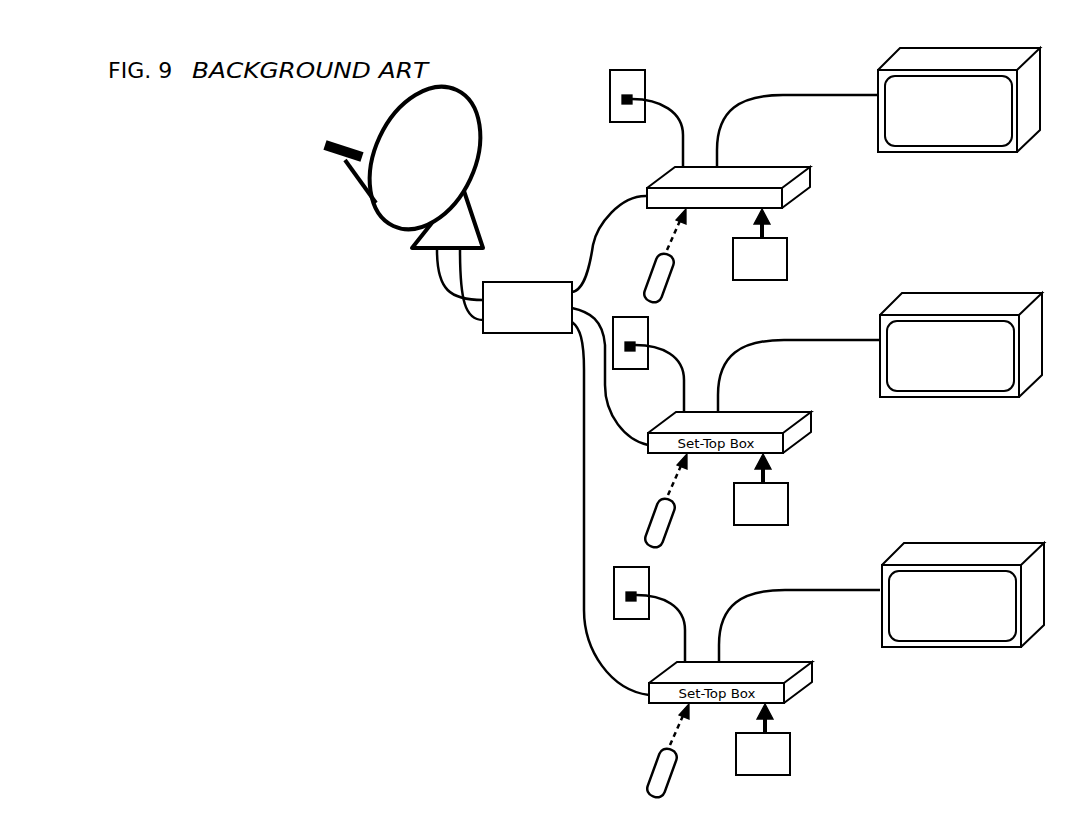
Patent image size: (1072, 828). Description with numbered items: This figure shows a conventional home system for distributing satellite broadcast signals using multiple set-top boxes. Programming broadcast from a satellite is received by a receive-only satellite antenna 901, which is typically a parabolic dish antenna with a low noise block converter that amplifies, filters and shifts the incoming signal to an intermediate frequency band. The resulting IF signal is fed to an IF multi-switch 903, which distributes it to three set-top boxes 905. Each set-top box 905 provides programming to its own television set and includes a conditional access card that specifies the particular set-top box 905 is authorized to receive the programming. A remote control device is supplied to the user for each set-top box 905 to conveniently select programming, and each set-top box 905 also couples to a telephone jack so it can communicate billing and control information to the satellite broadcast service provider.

The receive-only satellite antenna 901 is at (427, 252).
The IF multi-switch 903 is at (530, 333).
The set-top box 905 is at (770, 166).